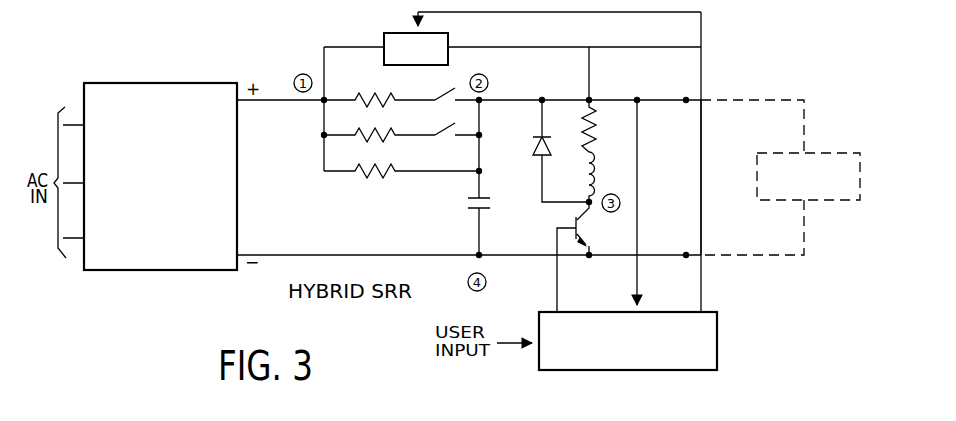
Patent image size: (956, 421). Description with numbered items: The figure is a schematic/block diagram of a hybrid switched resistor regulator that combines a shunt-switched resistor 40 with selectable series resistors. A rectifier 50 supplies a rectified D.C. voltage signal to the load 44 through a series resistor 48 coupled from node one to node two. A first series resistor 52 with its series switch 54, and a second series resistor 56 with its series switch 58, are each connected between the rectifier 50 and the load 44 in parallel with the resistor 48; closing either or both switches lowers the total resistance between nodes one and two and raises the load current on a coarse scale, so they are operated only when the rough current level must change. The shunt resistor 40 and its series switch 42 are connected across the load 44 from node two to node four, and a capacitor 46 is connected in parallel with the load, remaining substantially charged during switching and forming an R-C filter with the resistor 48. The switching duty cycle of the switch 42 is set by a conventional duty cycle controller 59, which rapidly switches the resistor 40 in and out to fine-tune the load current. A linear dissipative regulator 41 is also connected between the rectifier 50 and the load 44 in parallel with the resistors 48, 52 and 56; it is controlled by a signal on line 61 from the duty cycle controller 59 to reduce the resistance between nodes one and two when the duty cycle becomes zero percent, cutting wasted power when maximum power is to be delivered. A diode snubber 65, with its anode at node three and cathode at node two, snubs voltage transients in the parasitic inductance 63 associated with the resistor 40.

The rectifier 50 is at (162, 83).
The linear dissipative regulator (LDR) 41 is at (449, 36).
The second series resistor 56 is at (376, 95).
The series switch 58 is at (453, 88).
The first series resistor 52 is at (388, 130).
The series switch 54 is at (444, 128).
The series resistor 48 is at (393, 167).
The capacitor 46 is at (472, 208).
The diode snubber 65 is at (540, 154).
The shunt-switched resistor 40 is at (593, 140).
The parasitic inductance 63 is at (594, 178).
The series switch 42 is at (582, 224).
The duty cycle controller 59 is at (718, 312).
The line 61 is at (701, 222).
The load 44 is at (815, 151).